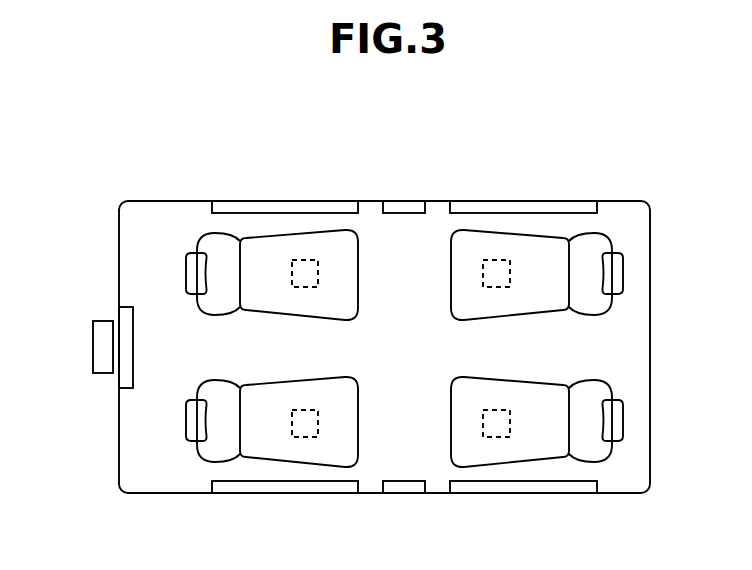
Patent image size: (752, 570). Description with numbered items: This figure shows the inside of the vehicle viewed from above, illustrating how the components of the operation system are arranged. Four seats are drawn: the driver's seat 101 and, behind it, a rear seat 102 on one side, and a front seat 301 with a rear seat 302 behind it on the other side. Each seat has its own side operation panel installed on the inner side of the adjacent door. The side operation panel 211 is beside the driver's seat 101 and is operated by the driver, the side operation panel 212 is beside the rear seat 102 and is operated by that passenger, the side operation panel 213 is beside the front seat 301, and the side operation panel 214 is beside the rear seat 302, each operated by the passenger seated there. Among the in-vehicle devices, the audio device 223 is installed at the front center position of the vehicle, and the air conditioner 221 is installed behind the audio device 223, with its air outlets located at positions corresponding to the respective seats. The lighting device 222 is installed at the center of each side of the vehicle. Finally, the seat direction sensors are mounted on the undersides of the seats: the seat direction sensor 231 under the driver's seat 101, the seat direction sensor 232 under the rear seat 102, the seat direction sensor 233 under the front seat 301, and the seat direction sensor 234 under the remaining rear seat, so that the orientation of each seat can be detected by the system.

The driver's seat 101 is at (186, 275).
The rear seat 102 is at (624, 276).
The front seat 301 is at (186, 423).
The rear seat 302 is at (624, 423).
The side operation panel 211 is at (284, 200).
The side operation panel 212 is at (521, 200).
The side operation panel 213 is at (285, 496).
The side operation panel 214 is at (523, 496).
The lighting device 222 is at (401, 200).
The air conditioner 221 is at (92, 350).
The audio device 223 is at (118, 382).
The seat direction sensor 231 is at (305, 258).
The seat direction sensor 232 is at (497, 258).
The seat direction sensor 233 is at (307, 438).
The seat direction sensor 234 is at (497, 438).